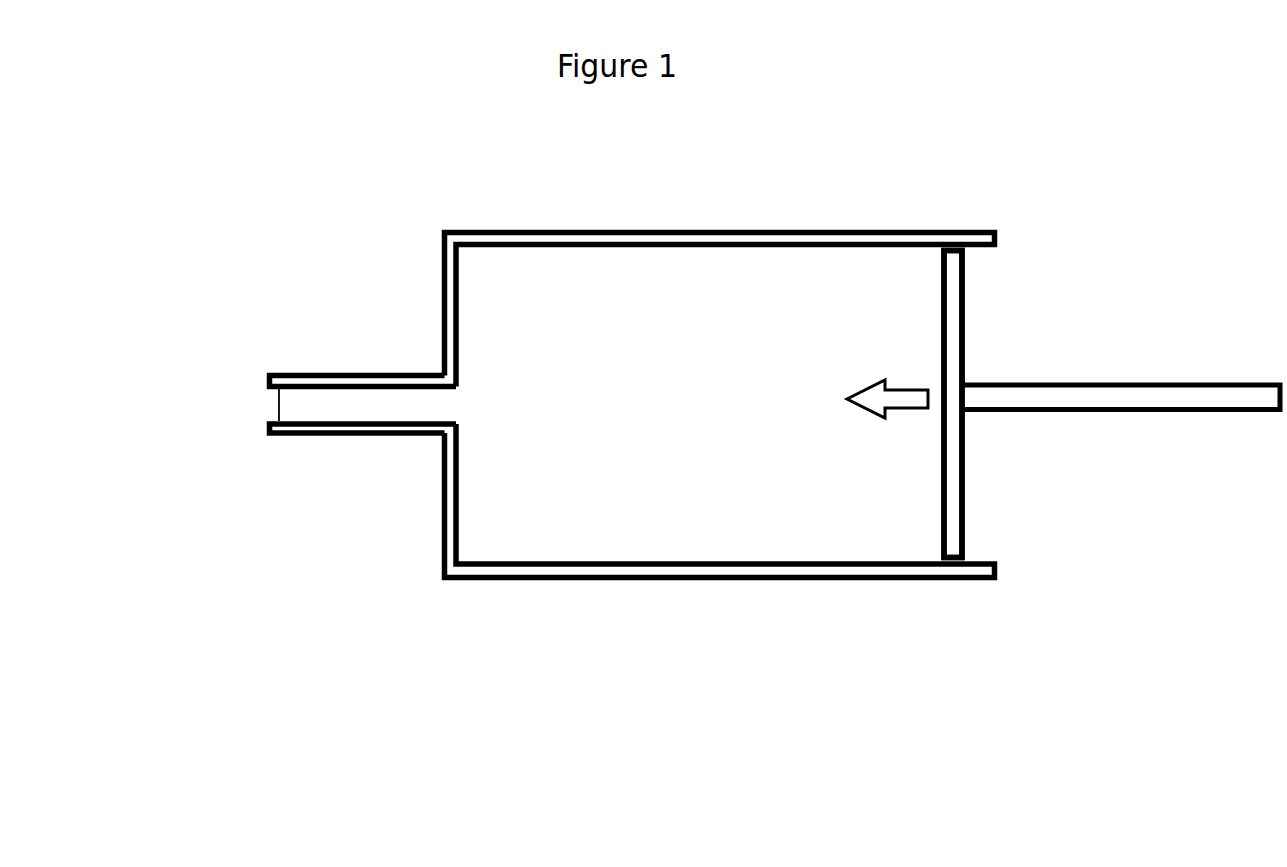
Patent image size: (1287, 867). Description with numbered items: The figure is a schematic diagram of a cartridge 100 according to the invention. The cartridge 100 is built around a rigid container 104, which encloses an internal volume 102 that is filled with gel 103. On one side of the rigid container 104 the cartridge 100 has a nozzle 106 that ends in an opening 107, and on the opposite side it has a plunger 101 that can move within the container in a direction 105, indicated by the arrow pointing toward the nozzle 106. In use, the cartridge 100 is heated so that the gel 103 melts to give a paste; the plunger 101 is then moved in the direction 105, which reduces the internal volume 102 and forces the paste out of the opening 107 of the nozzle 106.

The cartridge 100 is at (882, 80).
The plunger 101 is at (1055, 385).
The internal volume 102 is at (783, 431).
The gel 103 is at (953, 404).
The rigid container 104 is at (687, 568).
The direction 105 is at (887, 384).
The nozzle 106 is at (352, 378).
The opening 107 is at (273, 405).